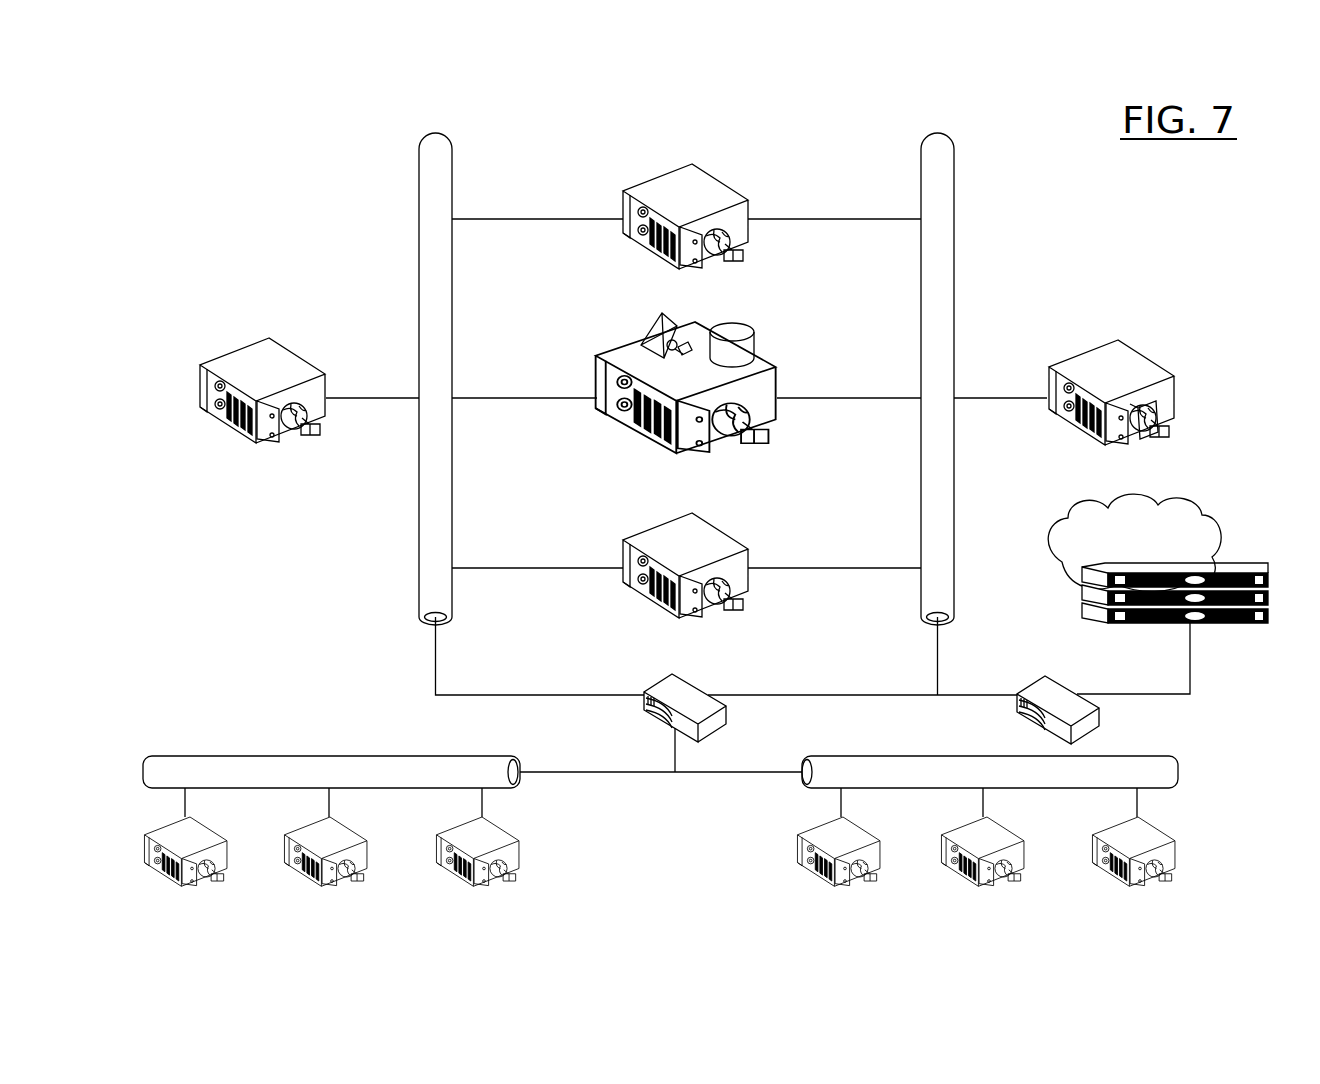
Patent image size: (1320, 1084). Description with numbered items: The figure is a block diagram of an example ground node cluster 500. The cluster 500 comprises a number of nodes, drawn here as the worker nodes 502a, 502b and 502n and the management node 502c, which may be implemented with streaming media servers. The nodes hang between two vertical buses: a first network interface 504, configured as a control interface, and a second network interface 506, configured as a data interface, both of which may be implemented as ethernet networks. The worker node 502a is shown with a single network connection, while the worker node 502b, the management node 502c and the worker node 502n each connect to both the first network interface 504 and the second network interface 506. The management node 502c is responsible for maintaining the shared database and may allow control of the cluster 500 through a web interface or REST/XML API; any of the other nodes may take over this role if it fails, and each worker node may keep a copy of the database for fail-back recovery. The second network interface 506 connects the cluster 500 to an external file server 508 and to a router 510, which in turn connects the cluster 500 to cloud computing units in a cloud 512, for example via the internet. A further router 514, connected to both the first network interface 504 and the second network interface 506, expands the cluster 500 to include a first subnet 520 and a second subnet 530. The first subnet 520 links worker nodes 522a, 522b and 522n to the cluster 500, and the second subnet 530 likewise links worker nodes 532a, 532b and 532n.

The cluster 500 is at (243, 145).
The worker node 502a is at (312, 364).
The worker node 502b is at (735, 191).
The management node 502c is at (770, 363).
The worker node 502n is at (745, 547).
The first network interface 504 is at (419, 207).
The second network interface 506 is at (954, 215).
The file server 508 is at (1160, 364).
The router 510 is at (1073, 692).
The cloud 512 is at (1235, 566).
The router 514 is at (700, 691).
The first subnet 520 is at (237, 757).
The worker node 522a is at (212, 831).
The worker node 522b is at (352, 831).
The worker node 522n is at (504, 831).
The second subnet 530 is at (892, 757).
The worker node 532a is at (865, 831).
The worker node 532b is at (1009, 831).
The worker node 532n is at (1160, 831).